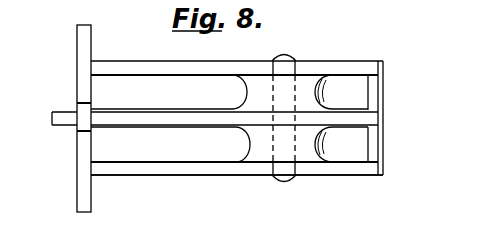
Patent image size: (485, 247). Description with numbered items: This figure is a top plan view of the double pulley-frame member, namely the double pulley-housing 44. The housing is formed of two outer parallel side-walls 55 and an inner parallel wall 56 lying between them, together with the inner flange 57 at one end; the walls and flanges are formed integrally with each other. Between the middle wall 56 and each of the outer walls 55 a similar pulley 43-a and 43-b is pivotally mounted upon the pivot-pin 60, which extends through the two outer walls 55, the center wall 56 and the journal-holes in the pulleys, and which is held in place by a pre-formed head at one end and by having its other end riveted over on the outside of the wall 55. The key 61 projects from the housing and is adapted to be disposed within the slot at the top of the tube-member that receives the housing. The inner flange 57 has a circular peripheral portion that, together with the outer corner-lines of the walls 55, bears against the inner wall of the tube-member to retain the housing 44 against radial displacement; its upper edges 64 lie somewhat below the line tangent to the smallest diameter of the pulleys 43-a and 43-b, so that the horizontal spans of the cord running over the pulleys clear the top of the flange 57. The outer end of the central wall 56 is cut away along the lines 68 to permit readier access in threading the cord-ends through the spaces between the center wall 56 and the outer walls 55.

The key 61 is at (78, 127).
The cut-away lines 68 is at (180, 117).
The outer parallel side-walls 55 is at (350, 68).
The inner flange 57 is at (382, 145).
The upper edges of the inner flange 64 is at (375, 97).
The inner parallel wall 56 is at (208, 113).
The pulley 43-a is at (263, 148).
The pulley 43-b is at (305, 90).
The pivot-pin 60 is at (282, 182).
The double pulley-housing 44 is at (225, 184).